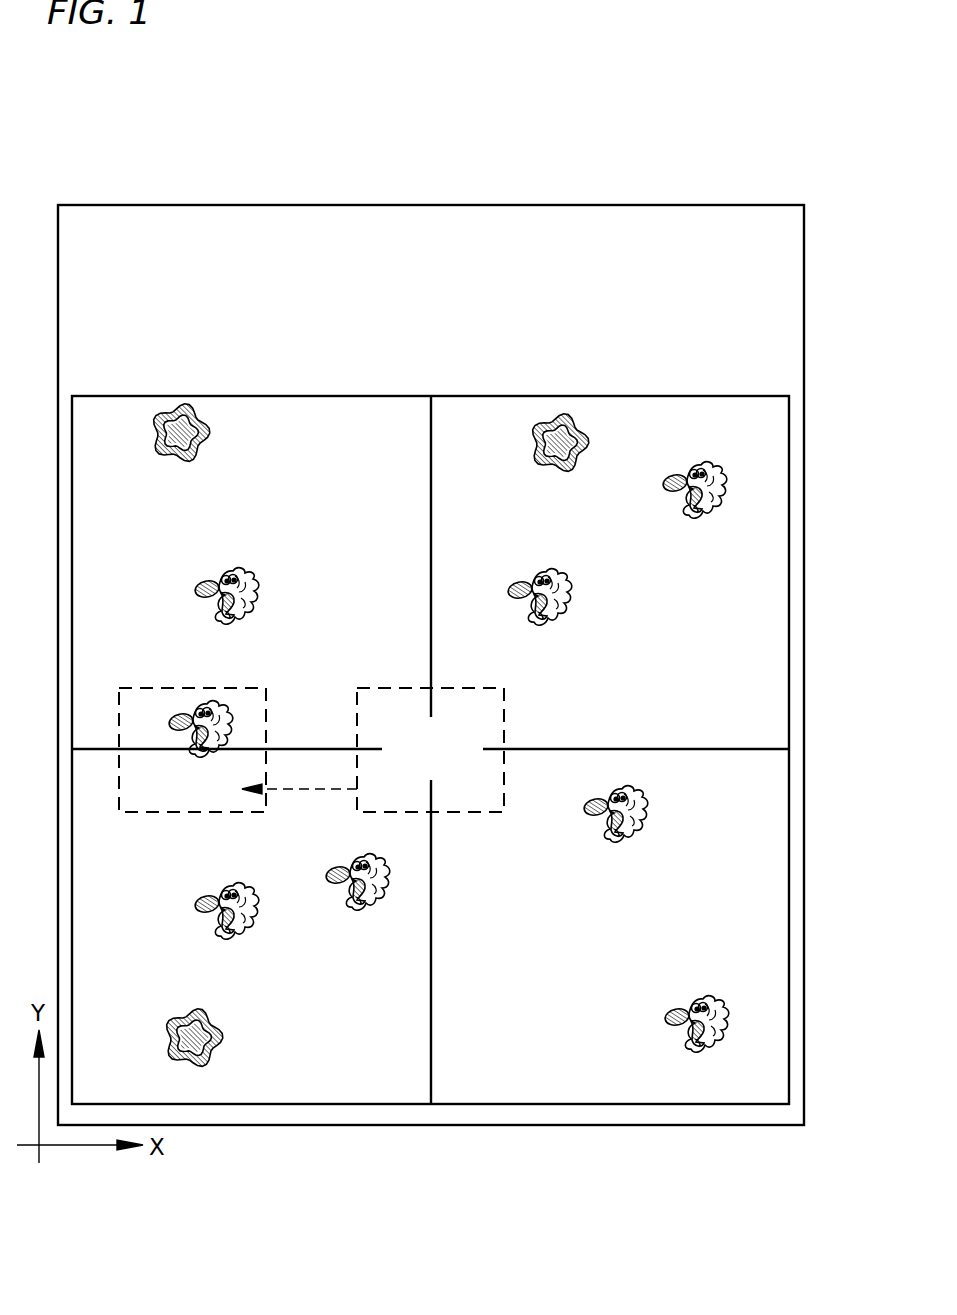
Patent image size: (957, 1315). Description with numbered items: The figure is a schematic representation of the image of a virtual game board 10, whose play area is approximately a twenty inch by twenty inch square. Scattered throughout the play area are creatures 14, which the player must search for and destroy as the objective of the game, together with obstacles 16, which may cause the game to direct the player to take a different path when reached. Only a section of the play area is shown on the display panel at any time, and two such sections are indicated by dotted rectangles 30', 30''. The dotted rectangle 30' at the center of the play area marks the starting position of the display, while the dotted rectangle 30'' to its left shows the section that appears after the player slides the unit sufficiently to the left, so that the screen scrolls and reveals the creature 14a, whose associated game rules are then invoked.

The virtual game board 10 is at (806, 524).
The creatures 14 is at (252, 612).
The creature 14a is at (237, 718).
The obstacles 16 is at (207, 446).
The dotted rectangle 30' is at (463, 750).
The dotted rectangle 30'' is at (192, 724).